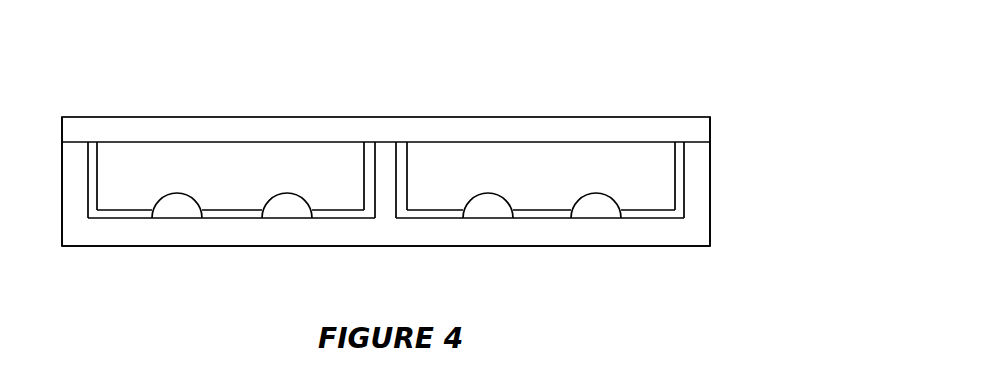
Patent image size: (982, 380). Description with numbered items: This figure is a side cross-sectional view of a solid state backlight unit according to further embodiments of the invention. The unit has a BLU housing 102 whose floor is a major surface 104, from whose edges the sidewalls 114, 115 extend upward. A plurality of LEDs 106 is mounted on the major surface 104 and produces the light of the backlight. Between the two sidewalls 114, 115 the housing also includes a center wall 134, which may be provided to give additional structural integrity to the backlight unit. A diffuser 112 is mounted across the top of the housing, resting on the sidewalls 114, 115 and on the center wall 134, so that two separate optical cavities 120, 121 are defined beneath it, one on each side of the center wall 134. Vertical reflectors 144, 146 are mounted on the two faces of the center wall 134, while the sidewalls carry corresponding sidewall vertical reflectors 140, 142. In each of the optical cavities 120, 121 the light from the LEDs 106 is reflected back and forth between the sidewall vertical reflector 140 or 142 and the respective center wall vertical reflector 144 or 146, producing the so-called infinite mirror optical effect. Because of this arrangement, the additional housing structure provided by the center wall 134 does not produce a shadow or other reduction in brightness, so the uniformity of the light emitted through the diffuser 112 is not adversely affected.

The BLU housing 102 is at (710, 162).
The major surface 104 is at (219, 230).
The LEDs 106 is at (500, 212).
The diffuser 112 is at (630, 130).
The sidewall 114 is at (75, 185).
The sidewall 115 is at (700, 193).
The optical cavity 120 is at (198, 155).
The optical cavity 121 is at (495, 153).
The center wall 134 is at (384, 200).
The sidewall vertical reflector 140 is at (92, 155).
The sidewall vertical reflector 142 is at (675, 203).
The center wall vertical reflector 144 is at (368, 149).
The center wall vertical reflector 146 is at (406, 149).